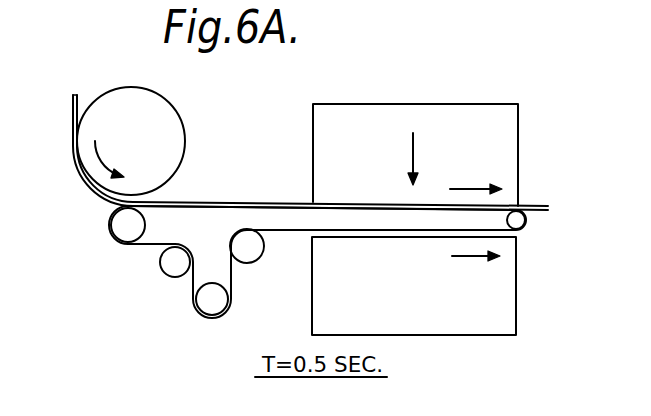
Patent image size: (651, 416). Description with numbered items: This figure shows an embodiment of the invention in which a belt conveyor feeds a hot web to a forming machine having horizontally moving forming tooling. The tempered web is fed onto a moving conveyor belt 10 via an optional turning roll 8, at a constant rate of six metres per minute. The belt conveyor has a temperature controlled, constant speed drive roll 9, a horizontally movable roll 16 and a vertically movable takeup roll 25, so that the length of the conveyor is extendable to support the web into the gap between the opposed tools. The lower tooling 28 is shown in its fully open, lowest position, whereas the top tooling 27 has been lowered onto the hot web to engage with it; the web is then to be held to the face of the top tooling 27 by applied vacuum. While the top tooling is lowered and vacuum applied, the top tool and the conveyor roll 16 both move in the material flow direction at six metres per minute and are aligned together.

The turning roll 8 is at (122, 100).
The drive roll 9 is at (118, 223).
The conveyor belt 10 is at (174, 212).
The horizontally movable roll 16 is at (527, 208).
The takeup roll 25 is at (203, 303).
The top tooling 27 is at (325, 143).
The lower tooling 28 is at (500, 311).